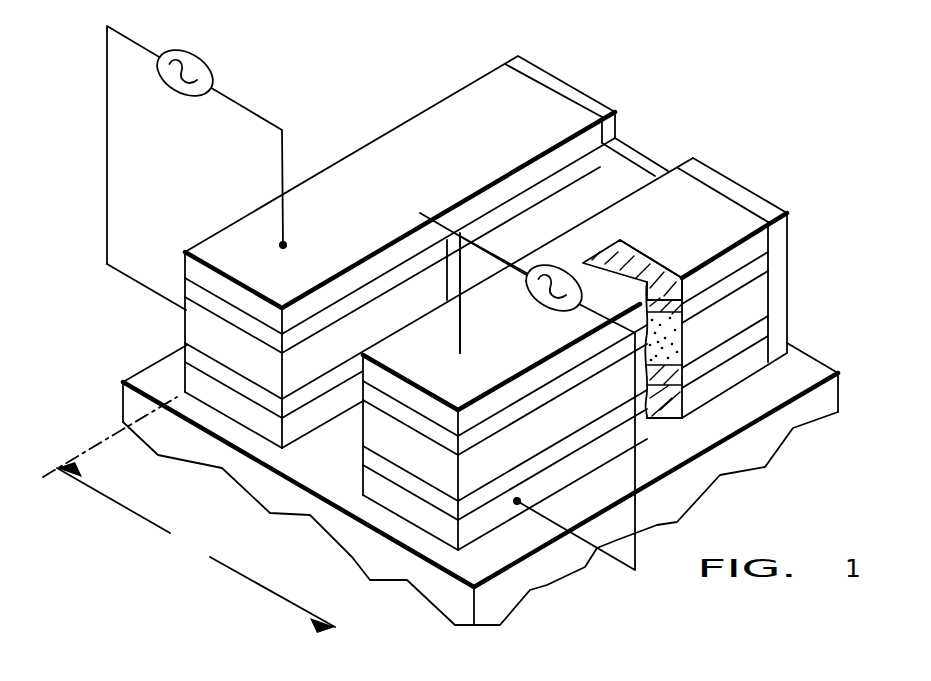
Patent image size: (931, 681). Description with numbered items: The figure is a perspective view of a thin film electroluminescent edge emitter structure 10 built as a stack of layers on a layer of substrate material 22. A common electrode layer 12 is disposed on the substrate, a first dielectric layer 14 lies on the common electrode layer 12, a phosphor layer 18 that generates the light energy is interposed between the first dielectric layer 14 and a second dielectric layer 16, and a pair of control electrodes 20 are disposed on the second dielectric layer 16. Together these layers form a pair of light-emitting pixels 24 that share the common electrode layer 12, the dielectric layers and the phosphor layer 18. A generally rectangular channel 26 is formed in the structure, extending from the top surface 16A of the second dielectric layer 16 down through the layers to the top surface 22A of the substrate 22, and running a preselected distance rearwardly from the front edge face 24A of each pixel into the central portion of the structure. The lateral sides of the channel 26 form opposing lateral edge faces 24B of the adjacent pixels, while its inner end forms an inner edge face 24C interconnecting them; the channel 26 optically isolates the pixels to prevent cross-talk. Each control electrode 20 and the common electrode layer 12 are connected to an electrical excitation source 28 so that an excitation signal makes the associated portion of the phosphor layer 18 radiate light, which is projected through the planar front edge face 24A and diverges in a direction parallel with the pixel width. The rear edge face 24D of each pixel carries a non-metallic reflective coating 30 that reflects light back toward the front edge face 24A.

The TFEL edge emitter structure 10 is at (373, 110).
The common electrode layer 12 is at (750, 363).
The first dielectric layer 14 is at (767, 332).
The second dielectric layer 16 is at (767, 263).
The top surface of the second dielectric layer 16A is at (400, 262).
The phosphor layer 18 is at (760, 307).
The control electrode 20 is at (587, 140).
The substrate layer 22 is at (763, 440).
The top surface of the substrate layer 22A is at (156, 378).
The light-emitting pixel 24 is at (494, 297).
The front edge face 24A is at (257, 362).
The lateral edge face 24B is at (330, 340).
The inner edge face 24C is at (453, 277).
The rear edge face 24D is at (516, 57).
The channel 26 is at (290, 505).
The electrical excitation source 28 is at (198, 50).
The non-metallic reflective coating 30 is at (644, 165).